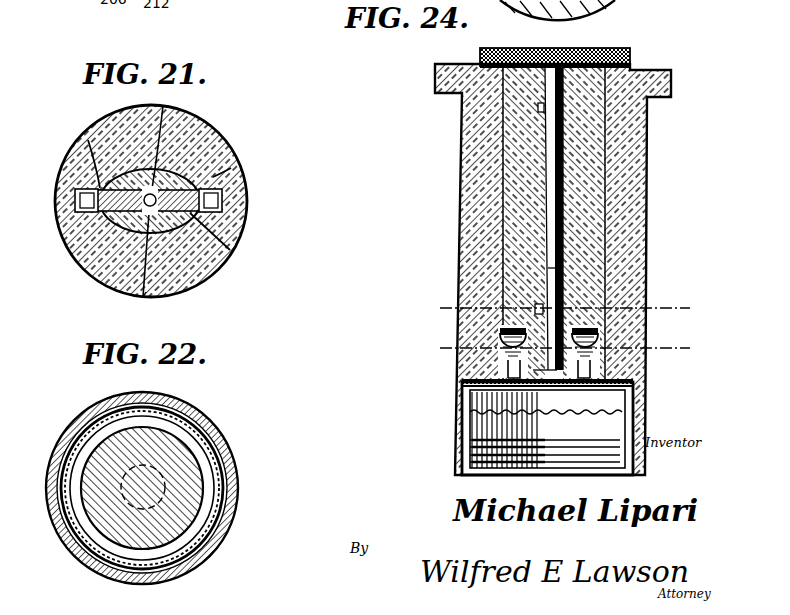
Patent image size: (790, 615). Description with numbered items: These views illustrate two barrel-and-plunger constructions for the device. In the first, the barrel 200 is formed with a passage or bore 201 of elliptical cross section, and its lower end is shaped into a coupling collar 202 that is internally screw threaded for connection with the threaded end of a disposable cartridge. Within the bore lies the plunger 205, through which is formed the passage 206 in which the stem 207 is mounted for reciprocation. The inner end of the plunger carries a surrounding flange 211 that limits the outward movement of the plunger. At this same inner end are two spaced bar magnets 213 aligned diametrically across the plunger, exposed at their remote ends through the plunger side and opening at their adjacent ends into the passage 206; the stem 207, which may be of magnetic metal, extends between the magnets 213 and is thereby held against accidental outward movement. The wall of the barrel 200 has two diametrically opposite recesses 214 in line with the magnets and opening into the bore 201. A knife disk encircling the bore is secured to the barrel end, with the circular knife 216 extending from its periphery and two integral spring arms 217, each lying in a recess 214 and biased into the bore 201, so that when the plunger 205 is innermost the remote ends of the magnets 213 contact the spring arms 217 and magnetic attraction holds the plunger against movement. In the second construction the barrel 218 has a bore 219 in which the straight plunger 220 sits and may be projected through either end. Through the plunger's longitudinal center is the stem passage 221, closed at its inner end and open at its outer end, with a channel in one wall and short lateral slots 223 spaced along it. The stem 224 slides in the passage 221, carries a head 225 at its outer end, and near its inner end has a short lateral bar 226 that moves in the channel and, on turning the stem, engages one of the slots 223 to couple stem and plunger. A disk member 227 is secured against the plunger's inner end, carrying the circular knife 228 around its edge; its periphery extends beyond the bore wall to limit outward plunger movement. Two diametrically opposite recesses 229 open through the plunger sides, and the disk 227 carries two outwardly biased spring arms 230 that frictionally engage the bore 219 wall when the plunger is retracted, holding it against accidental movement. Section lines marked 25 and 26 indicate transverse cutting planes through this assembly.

In FIG. 21, the barrel 200 is at (215, 131).
In FIG. 21, the passage or bore 201 is at (230, 250).
In FIG. 21, the plunger 205 is at (183, 178).
In FIG. 21, the passage 206 is at (143, 297).
In FIG. 21, the stem 207 is at (162, 124).
In FIG. 21, the bar magnets 213 is at (88, 140).
In FIG. 21, the recesses 214 is at (76, 192).
In FIG. 21, the spring arms 217 is at (82, 202).
In FIG. 22, the coupling collar 202 is at (207, 423).
In FIG. 22, the circular knife 216 is at (212, 447).
In FIG. 22, the flange 211 is at (195, 483).
In FIG. 24, the barrel 218 is at (650, 233).
In FIG. 24, the bore 219 is at (503, 183).
In FIG. 24, the straight plunger 220 is at (600, 150).
In FIG. 24, the stem passage 221 is at (564, 197).
In FIG. 24, the lateral slots 223 is at (538, 107).
In FIG. 24, the stem 224 is at (560, 264).
In FIG. 24, the head 225 is at (604, 49).
In FIG. 24, the lateral bar 226 is at (538, 400).
In FIG. 24, the disk member 227 is at (600, 413).
In FIG. 24, the circular knife 228 is at (636, 410).
In FIG. 24, the recesses 229 is at (500, 374).
In FIG. 24, the spring arms 230 is at (503, 346).
In FIG. 24, the section line 25- 25 is at (443, 306).
In FIG. 24, the section line 26- 26 is at (425, 346).